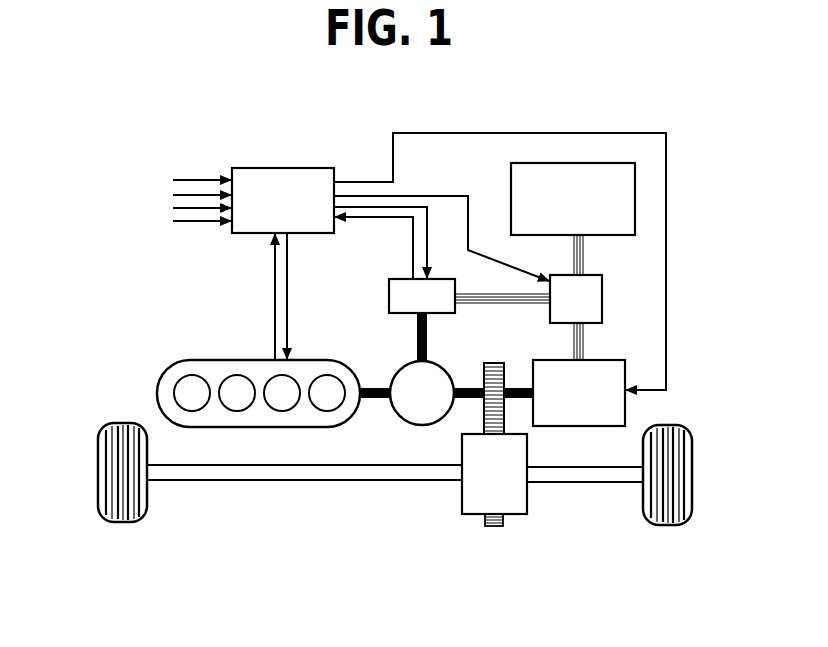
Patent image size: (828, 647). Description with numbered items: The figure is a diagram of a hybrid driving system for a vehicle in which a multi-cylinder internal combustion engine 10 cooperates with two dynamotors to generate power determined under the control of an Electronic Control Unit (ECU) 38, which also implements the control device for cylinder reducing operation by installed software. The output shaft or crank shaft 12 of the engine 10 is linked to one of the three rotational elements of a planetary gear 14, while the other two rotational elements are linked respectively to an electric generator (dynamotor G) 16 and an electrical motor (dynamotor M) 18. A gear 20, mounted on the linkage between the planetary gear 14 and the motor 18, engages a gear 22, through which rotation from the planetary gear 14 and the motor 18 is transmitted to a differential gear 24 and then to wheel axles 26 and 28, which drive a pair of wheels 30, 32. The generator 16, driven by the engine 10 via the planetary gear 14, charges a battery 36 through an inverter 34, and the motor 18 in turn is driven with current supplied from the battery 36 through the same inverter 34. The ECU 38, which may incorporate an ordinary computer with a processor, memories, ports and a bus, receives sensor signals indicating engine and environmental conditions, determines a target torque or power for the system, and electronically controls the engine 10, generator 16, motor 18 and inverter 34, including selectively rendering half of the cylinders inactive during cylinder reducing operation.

The multi-cylinder internal combustion engine 10 is at (212, 360).
The output shaft (crank shaft) 12 is at (376, 398).
The planetary gear 14 is at (394, 378).
The electric generator (dynamotor G) 16 is at (389, 304).
The electrical motor (dynamotor M) 18 is at (543, 359).
The gear 20 is at (484, 363).
The gear 22 is at (492, 526).
The differential gear 24 is at (465, 513).
The wheel axle 26 is at (272, 481).
The wheel axle 28 is at (575, 484).
The wheel 30 is at (120, 523).
The wheel 32 is at (665, 526).
The inverter 34 is at (602, 300).
The battery 36 is at (511, 185).
The Electronic Control Unit (ECU) 38 is at (275, 168).